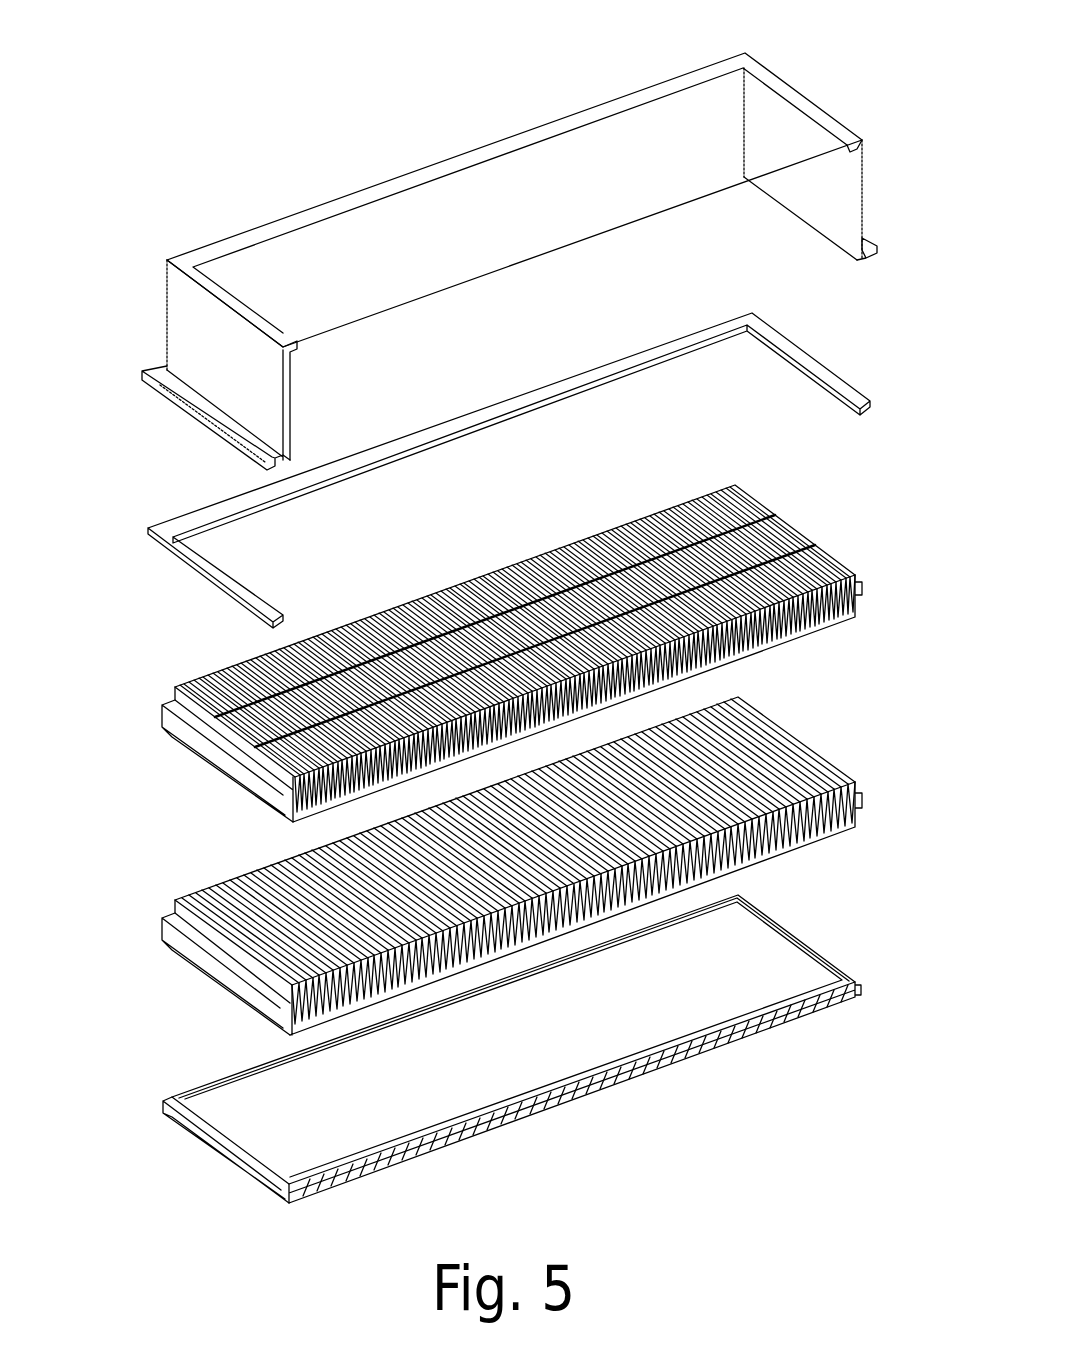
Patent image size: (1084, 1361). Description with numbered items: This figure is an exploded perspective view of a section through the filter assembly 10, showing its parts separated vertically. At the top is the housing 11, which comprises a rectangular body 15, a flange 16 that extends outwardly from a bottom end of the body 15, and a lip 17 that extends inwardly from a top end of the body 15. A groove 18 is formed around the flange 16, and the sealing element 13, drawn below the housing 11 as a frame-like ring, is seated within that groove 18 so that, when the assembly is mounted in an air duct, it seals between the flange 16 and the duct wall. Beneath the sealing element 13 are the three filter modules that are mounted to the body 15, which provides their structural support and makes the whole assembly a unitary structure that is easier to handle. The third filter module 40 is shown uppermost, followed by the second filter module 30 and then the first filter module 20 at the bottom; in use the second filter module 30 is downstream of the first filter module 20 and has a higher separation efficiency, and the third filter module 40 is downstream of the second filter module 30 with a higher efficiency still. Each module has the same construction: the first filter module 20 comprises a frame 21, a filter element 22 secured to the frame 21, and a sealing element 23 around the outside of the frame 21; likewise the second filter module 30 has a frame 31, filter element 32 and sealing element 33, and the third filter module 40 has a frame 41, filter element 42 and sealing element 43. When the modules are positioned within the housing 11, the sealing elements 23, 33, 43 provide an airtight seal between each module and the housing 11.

The filter assembly 10 is at (318, 84).
The housing 11 is at (788, 83).
The sealing element 13 is at (863, 387).
The body 15 is at (185, 320).
The flange 16 is at (192, 415).
The lip 17 is at (845, 138).
The groove 18 is at (863, 254).
The first filter module 20 is at (820, 957).
The frame 21 is at (172, 1096).
The filter element 22 is at (247, 1092).
The sealing element 23 is at (178, 1120).
The second filter module 30 is at (823, 758).
The frame 31 is at (175, 898).
The filter element 32 is at (237, 892).
The sealing element 33 is at (177, 933).
The third filter module 40 is at (822, 547).
The frame 41 is at (175, 686).
The filter element 42 is at (237, 672).
The sealing element 43 is at (177, 718).